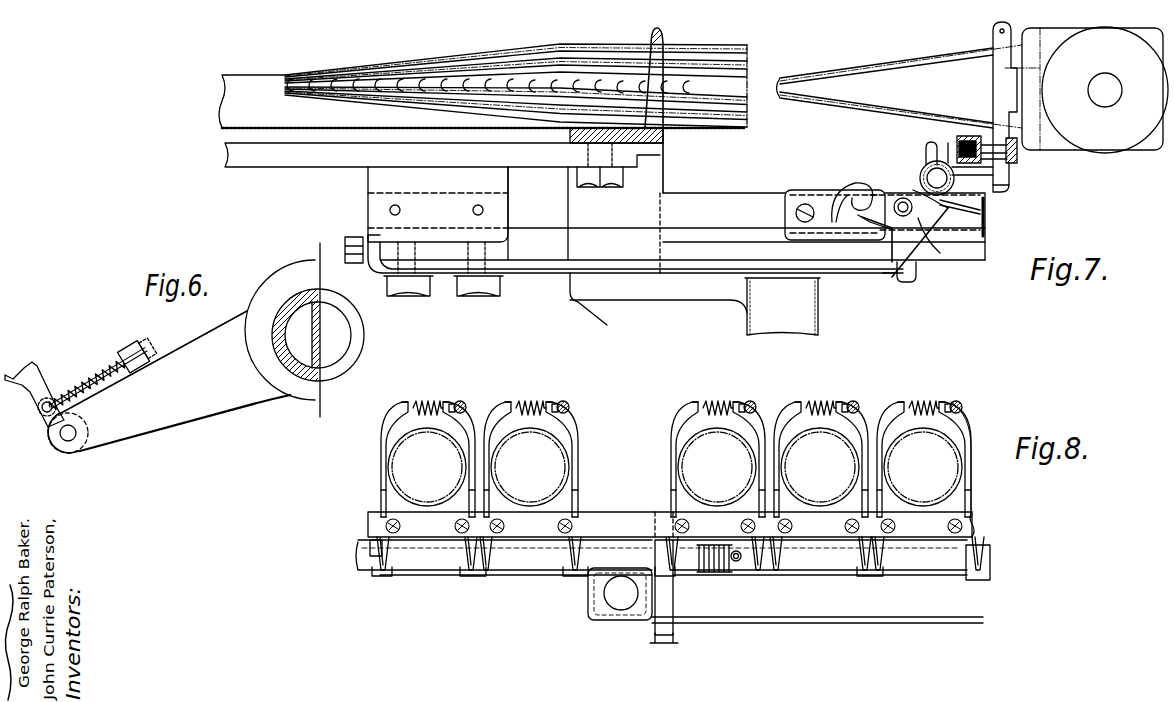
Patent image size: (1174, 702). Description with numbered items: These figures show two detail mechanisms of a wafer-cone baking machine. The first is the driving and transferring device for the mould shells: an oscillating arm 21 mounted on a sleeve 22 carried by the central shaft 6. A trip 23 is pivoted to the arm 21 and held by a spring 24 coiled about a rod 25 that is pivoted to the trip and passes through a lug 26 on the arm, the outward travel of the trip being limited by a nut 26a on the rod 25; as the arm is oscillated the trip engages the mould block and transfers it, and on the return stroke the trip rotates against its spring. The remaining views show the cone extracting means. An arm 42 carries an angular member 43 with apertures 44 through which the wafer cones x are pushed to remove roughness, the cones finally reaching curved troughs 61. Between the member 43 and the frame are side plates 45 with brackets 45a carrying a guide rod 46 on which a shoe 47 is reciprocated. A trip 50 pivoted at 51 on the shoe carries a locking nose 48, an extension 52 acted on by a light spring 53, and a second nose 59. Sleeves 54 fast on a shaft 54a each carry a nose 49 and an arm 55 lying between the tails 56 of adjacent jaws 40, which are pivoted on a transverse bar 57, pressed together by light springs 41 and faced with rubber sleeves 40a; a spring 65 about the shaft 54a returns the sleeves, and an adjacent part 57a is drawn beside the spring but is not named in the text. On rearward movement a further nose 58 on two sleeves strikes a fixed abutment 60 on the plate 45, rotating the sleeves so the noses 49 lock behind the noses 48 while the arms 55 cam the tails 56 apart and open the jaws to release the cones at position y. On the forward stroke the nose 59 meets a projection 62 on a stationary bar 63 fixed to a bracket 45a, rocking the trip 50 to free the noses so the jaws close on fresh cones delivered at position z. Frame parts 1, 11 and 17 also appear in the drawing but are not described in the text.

In FIG. 7, the frame bracket 1 is at (818, 320).
In FIG. 6, the central shaft 6 is at (276, 339).
In FIG. 7, the mounting plate 11 is at (1072, 150).
In FIG. 7, the disc 17 is at (1142, 146).
In FIG. 6, the oscillating arm 21 is at (216, 406).
In FIG. 6, the sleeve 22 is at (298, 272).
In FIG. 6, the trip 23 is at (43, 394).
In FIG. 6, the spring 24 is at (82, 388).
In FIG. 6, the rod 25 is at (106, 380).
In FIG. 6, the lug 26 is at (135, 360).
In FIG. 6, the nut 26a is at (150, 352).
In FIG. 7, the pivoted jaw 40 is at (992, 88).
In FIG. 8, the pivoted jaw 40 is at (490, 473).
In FIG. 8, the rubber sleeve 40a is at (962, 490).
In FIG. 8, the light spring 41 is at (436, 400).
In FIG. 7, the arm 42 is at (650, 245).
In FIG. 7, the angular member 43 is at (631, 139).
In FIG. 7, the aperture 44 is at (651, 40).
In FIG. 7, the bar or plate 45 is at (530, 162).
In FIG. 7, the bracket 45a is at (375, 184).
In FIG. 7, the guide rod or rail 46 is at (700, 205).
In FIG. 8, the guide rod or rail 46 is at (624, 600).
In FIG. 7, the shoe or sleeve 47 is at (822, 195).
In FIG. 8, the shoe or sleeve 47 is at (590, 597).
In FIG. 7, the locking nose 48 is at (984, 234).
In FIG. 7, the locking nose 49 is at (977, 207).
In FIG. 7, the trip 50 is at (942, 253).
In FIG. 8, the trip 50 is at (675, 610).
In FIG. 7, the pivot 51 is at (903, 198).
In FIG. 8, the pivot 51 is at (730, 562).
In FIG. 7, the extension 52 is at (870, 222).
In FIG. 7, the light spring 53 is at (852, 193).
In FIG. 7, the sleeve 54 is at (922, 168).
In FIG. 8, the sleeve 54 is at (472, 578).
In FIG. 8, the shaft 54a is at (520, 567).
In FIG. 7, the arm 55 is at (988, 172).
In FIG. 8, the arm 55 is at (372, 547).
In FIG. 7, the tail 56 is at (997, 187).
In FIG. 8, the tail 56 is at (386, 558).
In FIG. 7, the transverse bar 57 is at (970, 135).
In FIG. 7, the adjusting nut 57a is at (1020, 152).
In FIG. 8, the adjusting nut 57a is at (620, 520).
In FIG. 7, the nose 58 is at (946, 145).
In FIG. 8, the nose 58 is at (665, 522).
In FIG. 7, the second nose 59 is at (893, 281).
In FIG. 8, the second nose 59 is at (674, 639).
In FIG. 7, the abutment 60 is at (667, 156).
In FIG. 7, the curved trough or guide 61 is at (250, 83).
In FIG. 7, the projection 62 is at (917, 266).
In FIG. 7, the stationary bar 63 is at (528, 277).
In FIG. 7, the spring 65 is at (960, 140).
In FIG. 8, the spring 65 is at (718, 573).
In FIG. 7, the wafer cone x is at (482, 62).
In FIG. 8, the wafer cone x is at (623, 467).
In FIG. 7, the release position y is at (734, 124).
In FIG. 7, the delivery position z is at (830, 108).